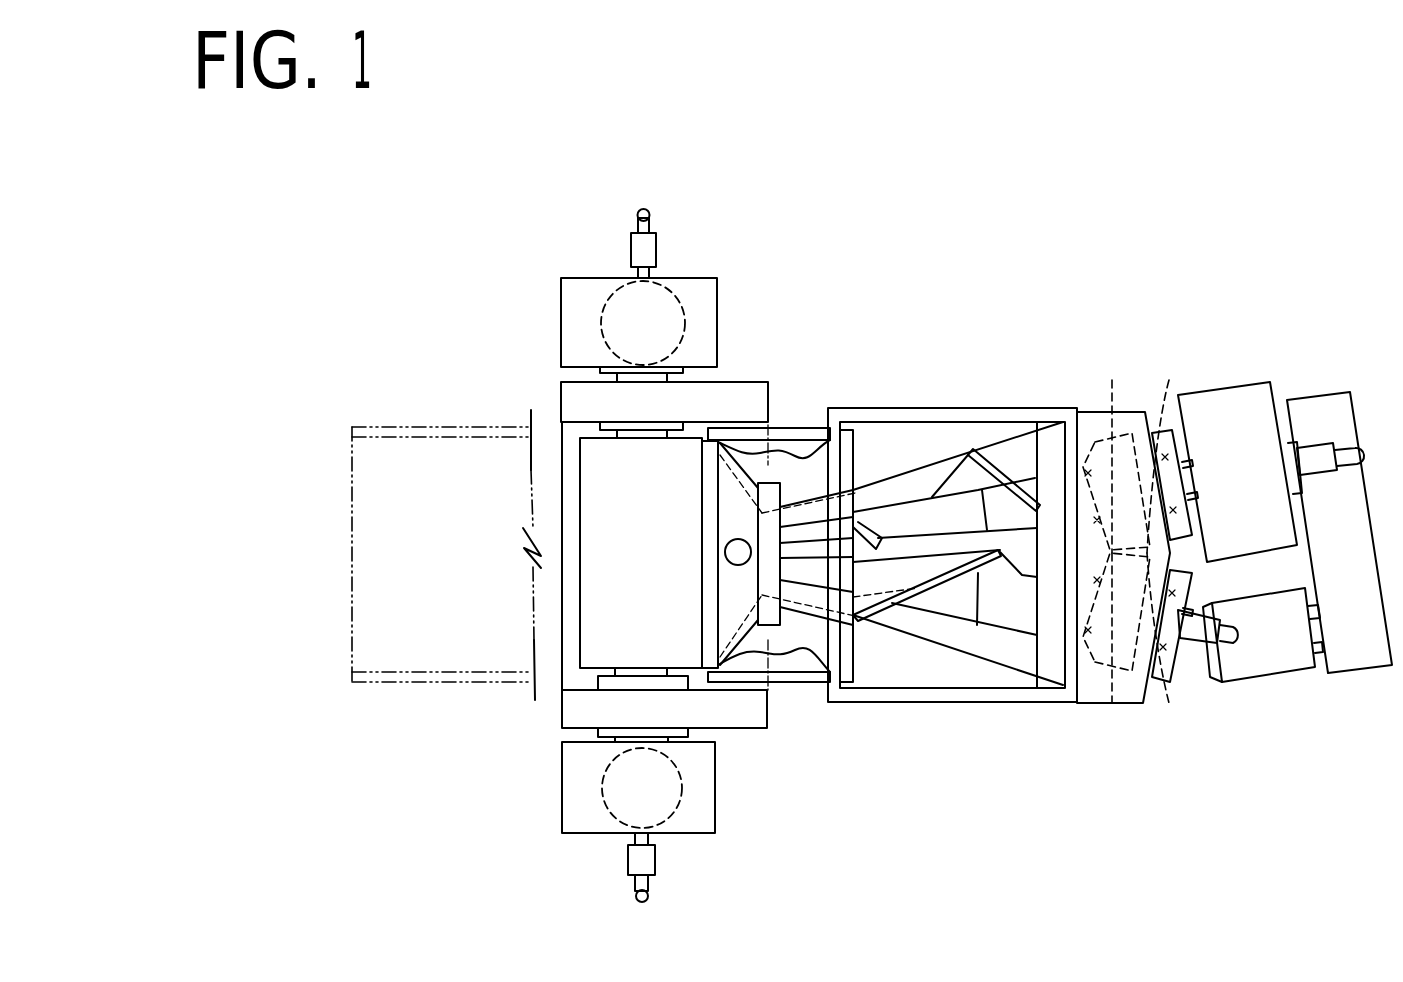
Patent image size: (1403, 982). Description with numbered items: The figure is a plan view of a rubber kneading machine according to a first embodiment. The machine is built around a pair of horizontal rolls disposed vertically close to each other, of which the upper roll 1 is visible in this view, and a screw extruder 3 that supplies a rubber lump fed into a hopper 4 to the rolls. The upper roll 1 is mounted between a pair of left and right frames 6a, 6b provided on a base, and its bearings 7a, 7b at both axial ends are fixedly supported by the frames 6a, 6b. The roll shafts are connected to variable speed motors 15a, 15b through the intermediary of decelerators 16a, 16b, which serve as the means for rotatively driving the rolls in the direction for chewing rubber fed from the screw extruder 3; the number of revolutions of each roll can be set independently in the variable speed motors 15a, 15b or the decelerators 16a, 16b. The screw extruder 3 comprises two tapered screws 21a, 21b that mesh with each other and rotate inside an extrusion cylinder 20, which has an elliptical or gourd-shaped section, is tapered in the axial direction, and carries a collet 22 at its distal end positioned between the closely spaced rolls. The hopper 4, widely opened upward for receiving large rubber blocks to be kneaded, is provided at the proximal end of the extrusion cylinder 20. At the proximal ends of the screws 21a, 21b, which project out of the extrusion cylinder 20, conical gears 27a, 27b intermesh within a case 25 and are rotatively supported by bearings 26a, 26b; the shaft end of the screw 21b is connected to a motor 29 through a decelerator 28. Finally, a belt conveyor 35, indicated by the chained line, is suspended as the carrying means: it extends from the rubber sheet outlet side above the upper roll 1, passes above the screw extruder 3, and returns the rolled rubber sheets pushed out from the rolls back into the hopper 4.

The upper roll 1 is at (595, 600).
The screw extruder 3 is at (891, 400).
The hopper 4 is at (892, 695).
The frame 6a is at (568, 717).
The frame 6b is at (570, 402).
The bearing 7a is at (680, 732).
The bearing 7b is at (687, 375).
The variable speed motor 15a is at (602, 805).
The variable speed motor 15b is at (683, 310).
The decelerator 16a is at (713, 817).
The decelerator 16b is at (579, 283).
The extrusion cylinder 20 is at (921, 478).
The tapered screw 21a is at (1002, 612).
The tapered screw 21b is at (967, 510).
The collet 22 is at (735, 607).
The case 25 is at (1090, 703).
The bearing 26a is at (1160, 681).
The bearing 26b is at (1160, 428).
The conical gear 27a is at (1108, 681).
The conical gear 27b is at (1112, 428).
The decelerator 28 is at (1247, 393).
The motor 29 is at (1282, 681).
The belt conveyor 35 is at (430, 440).